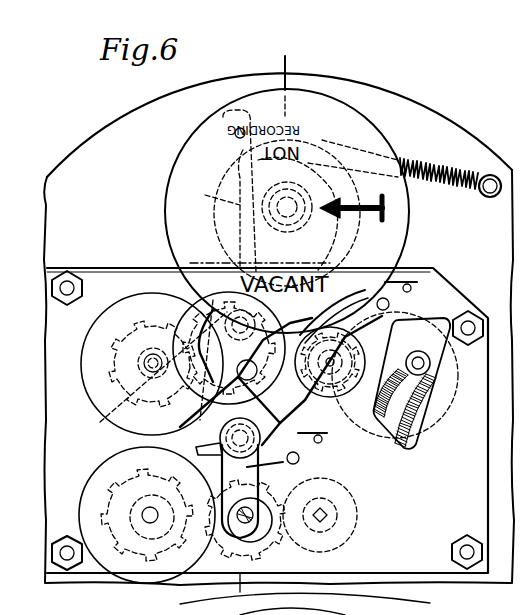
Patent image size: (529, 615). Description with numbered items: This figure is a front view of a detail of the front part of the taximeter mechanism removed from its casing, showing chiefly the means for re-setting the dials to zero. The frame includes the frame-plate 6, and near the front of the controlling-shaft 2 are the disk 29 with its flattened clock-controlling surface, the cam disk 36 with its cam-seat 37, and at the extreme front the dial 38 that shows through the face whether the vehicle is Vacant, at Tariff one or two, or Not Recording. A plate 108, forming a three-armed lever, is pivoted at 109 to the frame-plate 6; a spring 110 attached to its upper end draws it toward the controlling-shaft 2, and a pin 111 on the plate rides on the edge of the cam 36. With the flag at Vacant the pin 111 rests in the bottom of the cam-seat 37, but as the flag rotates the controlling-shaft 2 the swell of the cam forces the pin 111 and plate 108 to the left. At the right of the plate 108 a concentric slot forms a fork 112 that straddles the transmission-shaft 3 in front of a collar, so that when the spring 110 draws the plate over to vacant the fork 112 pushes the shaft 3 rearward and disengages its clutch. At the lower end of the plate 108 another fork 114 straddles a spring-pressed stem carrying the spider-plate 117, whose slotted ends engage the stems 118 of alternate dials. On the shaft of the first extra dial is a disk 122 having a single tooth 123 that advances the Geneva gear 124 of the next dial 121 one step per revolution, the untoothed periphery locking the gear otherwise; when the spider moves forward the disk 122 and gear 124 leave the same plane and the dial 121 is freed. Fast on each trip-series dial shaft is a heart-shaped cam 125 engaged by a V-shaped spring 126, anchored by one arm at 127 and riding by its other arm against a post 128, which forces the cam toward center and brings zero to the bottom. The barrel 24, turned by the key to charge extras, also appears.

The controlling-shaft 2 is at (290, 210).
The transmission-shaft 3 is at (420, 363).
The frame-plate 6 is at (466, 142).
The barrel 24 is at (340, 516).
The disk 29 is at (457, 611).
The cam disk 36 is at (352, 173).
The cam-seat 37 is at (222, 238).
The dial 38 is at (352, 105).
The plate 108 is at (190, 263).
The pivot 109 is at (215, 300).
The spring 110 is at (446, 180).
The pin 111 is at (205, 195).
The fork 112 is at (422, 428).
The fork 114 is at (196, 449).
The spider-plate 117 is at (120, 408).
The stems 118 is at (258, 545).
The dial 121 is at (113, 578).
The disk 122 is at (218, 590).
The tooth 123 is at (210, 482).
The Geneva gear 124 is at (118, 487).
The heart-shaped cam 125 is at (158, 552).
The spring 126 is at (336, 445).
The anchor 127 is at (340, 480).
The post 128 is at (368, 432).